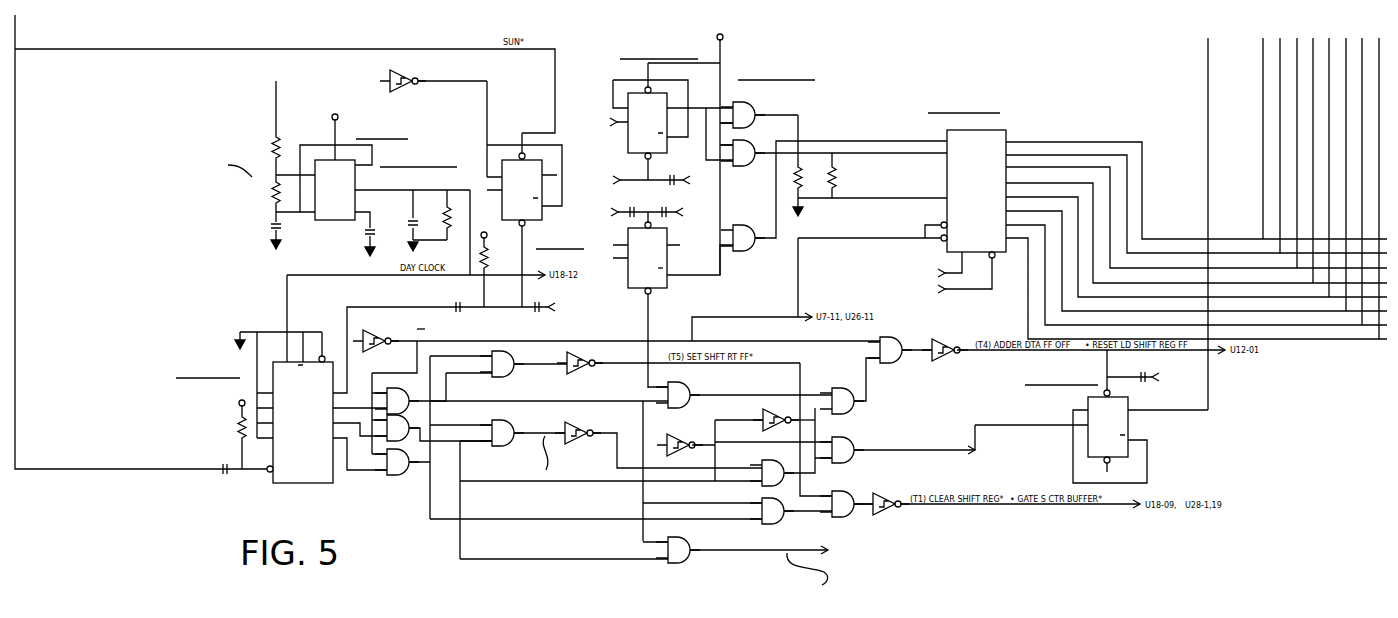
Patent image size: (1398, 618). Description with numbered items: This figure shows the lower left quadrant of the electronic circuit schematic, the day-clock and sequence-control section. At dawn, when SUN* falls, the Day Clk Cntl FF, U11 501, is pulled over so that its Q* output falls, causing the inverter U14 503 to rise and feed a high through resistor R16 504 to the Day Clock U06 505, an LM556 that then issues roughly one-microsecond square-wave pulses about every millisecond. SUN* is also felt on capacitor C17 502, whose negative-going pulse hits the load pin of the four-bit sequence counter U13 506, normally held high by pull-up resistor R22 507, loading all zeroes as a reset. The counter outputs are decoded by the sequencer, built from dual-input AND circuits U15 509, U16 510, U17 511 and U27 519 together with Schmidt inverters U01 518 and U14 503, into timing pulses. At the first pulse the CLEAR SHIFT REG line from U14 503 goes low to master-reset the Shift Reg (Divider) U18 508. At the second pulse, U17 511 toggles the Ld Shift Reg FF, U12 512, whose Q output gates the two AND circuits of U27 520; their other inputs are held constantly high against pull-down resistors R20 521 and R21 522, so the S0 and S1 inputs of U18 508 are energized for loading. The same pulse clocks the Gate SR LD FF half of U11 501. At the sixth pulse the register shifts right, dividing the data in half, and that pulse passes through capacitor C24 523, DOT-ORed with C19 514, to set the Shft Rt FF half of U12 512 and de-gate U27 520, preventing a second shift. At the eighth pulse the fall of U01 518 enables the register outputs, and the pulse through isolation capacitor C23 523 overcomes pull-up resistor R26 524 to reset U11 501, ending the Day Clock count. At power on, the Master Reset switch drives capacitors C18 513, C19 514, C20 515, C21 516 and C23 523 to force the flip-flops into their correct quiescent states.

The Day Clk Cntl FF / Gate SR LD FF 501 is at (500, 176).
The capacitor C17 502 is at (212, 478).
The inverter U14 503 is at (395, 70).
The resistor R16 504 is at (275, 146).
The Day Clock U06 505 is at (317, 163).
The sequence counter U13 506 is at (285, 378).
The pull-up resistor R22 507 is at (238, 416).
The Shift Reg (Divider) U18 508 is at (990, 130).
The AND circuit U15 509 is at (384, 476).
The AND circuit U16 510 is at (511, 426).
The AND circuit U17 511 is at (900, 340).
The Ld Shift Reg FF / Shft Rt FF U12 512 is at (628, 98).
The capacitor C18 513 is at (684, 182).
The capacitor C19 514 is at (626, 204).
The capacitor C20 515 is at (545, 305).
The capacitor C21 516 is at (1153, 386).
The Schmidt inverter U01 518 is at (362, 328).
The AND circuit U27 519 is at (665, 563).
The AND circuits U27 520 is at (763, 137).
The pull-down resistor R20 521 is at (804, 194).
The pull-down resistor R21 522 is at (849, 184).
The capacitors C23, C24 523 is at (667, 218).
The pull-up resistor R26 524 is at (478, 255).